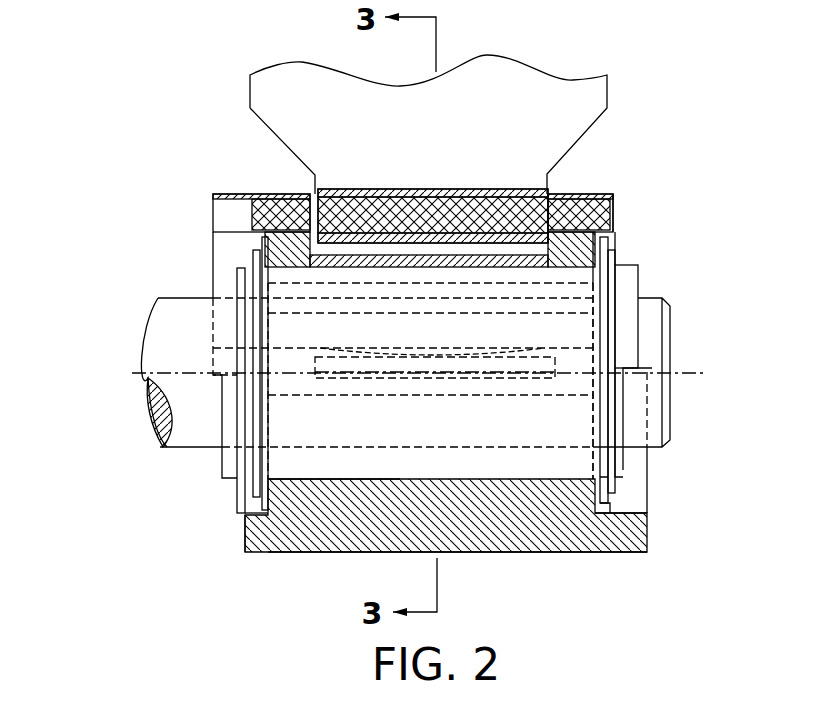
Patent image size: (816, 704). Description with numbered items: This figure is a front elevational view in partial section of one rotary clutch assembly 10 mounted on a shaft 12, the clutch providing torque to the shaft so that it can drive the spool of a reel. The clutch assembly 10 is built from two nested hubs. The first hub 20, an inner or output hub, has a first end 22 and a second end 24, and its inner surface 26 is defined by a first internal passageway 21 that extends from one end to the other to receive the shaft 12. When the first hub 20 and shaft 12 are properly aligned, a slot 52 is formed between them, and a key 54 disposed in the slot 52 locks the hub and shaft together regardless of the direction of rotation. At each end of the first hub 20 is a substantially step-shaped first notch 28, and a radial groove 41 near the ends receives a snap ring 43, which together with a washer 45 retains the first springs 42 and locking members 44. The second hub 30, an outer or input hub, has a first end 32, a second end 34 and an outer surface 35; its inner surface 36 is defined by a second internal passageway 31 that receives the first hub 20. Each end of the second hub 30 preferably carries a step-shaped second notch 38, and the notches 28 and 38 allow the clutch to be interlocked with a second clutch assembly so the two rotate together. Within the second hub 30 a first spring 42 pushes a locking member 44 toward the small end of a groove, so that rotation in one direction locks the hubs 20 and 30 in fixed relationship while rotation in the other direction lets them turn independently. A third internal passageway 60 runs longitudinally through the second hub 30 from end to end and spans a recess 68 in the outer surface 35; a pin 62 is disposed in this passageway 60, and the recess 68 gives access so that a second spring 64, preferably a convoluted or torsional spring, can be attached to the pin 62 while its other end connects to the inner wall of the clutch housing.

The rotary clutch assembly 10 is at (130, 229).
The shaft 12 is at (185, 456).
The first hub 20 is at (641, 264).
The first internal passageway 21 is at (320, 299).
The first end 22 is at (236, 271).
The second end 24 is at (626, 462).
The inner surface 26 is at (418, 299).
The first notch 28 is at (640, 293).
The second hub 30 is at (317, 553).
The second internal passageway 31 is at (377, 478).
The first end 32 is at (244, 546).
The second end 34 is at (615, 246).
The outer surface 35 is at (385, 553).
The inner surface 36 is at (308, 478).
The second notch 38 is at (608, 506).
The radial groove 41 is at (262, 276).
The first spring 42 is at (551, 346).
The snap ring 43 is at (613, 486).
The locking member 44 is at (488, 378).
The washer 45 is at (640, 527).
The slot 52 is at (580, 312).
The key 54 is at (316, 277).
The third internal passageway 60 is at (220, 220).
The pin 62 is at (238, 199).
The second spring 64 is at (330, 62).
The recess 68 is at (382, 196).